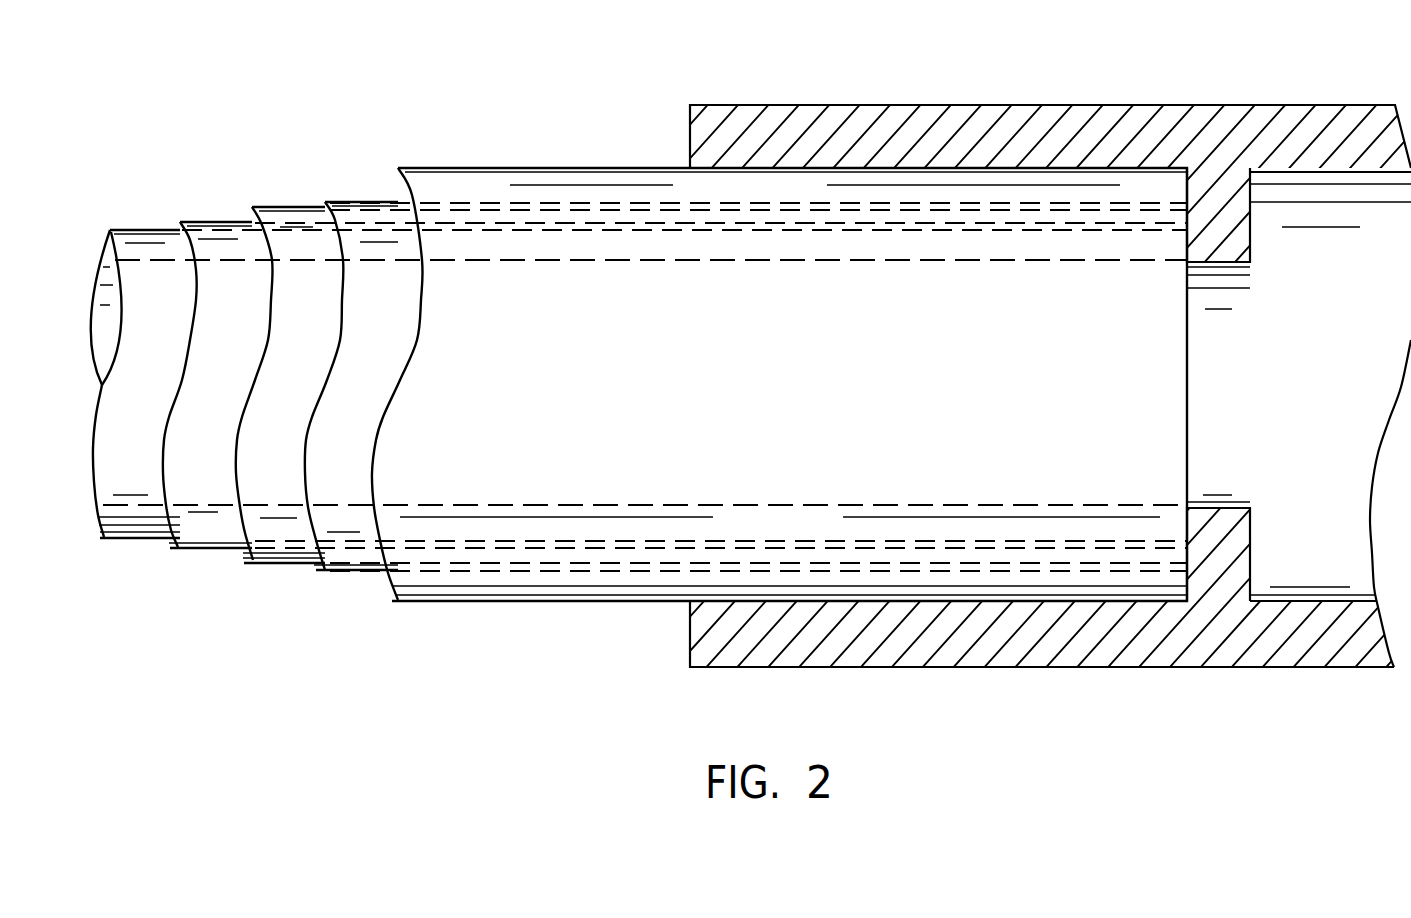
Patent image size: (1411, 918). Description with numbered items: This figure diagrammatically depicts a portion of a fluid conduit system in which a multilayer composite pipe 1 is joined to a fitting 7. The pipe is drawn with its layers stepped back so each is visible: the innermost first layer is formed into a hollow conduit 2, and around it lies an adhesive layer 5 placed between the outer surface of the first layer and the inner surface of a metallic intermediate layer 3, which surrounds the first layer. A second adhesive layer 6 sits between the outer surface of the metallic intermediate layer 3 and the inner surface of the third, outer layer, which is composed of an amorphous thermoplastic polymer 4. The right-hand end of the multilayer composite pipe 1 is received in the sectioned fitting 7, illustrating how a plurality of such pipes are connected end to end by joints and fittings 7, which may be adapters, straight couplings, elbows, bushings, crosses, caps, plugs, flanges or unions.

The multilayer composite pipe 1 is at (610, 168).
The hollow conduit 2 is at (137, 247).
The metallic intermediate layer 3 is at (282, 233).
The amorphous thermoplastic polymer 4 is at (533, 192).
The adhesive layer 5 is at (212, 243).
The second adhesive layer 6 is at (357, 235).
The fitting 7 is at (1028, 106).